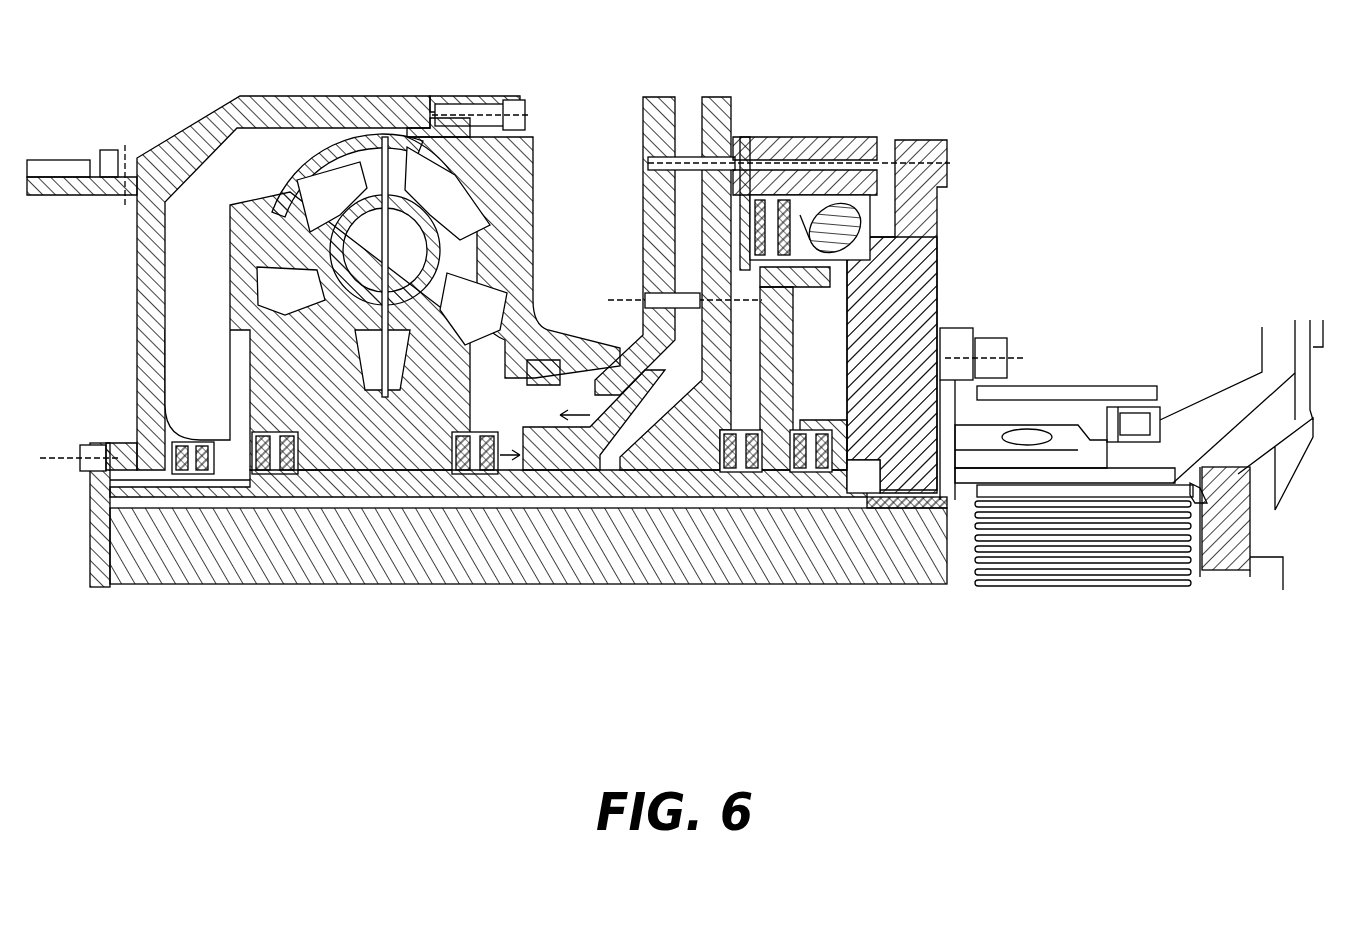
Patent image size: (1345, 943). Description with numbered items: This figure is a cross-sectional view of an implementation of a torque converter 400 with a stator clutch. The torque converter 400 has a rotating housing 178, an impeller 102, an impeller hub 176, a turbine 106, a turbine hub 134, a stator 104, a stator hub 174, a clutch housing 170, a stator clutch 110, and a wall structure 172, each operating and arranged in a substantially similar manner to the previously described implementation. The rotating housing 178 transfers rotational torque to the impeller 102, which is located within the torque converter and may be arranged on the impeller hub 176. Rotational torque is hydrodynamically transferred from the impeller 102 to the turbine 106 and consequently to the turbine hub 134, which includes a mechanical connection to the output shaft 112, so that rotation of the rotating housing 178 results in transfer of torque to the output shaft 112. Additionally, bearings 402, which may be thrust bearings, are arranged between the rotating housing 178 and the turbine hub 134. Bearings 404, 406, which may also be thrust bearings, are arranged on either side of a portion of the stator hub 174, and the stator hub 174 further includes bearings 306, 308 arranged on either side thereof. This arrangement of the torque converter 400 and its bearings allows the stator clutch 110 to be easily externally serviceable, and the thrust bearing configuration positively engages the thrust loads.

The torque converter 400 is at (1072, 72).
The rotating housing 178 is at (178, 125).
The turbine 106 is at (256, 205).
The impeller 102 is at (485, 197).
The impeller hub 176 is at (535, 343).
The wall structure 172 is at (712, 100).
The stator clutch 110 is at (773, 210).
The clutch housing 170 is at (918, 288).
The turbine hub 134 is at (230, 392).
The bearings 402 is at (198, 455).
The bearings 306 is at (266, 470).
The stator 104 is at (330, 395).
The stator hub 174 is at (428, 482).
The bearings 308 is at (455, 455).
The bearings 404 is at (735, 448).
The bearings 406 is at (808, 448).
The output shaft 112 is at (898, 568).